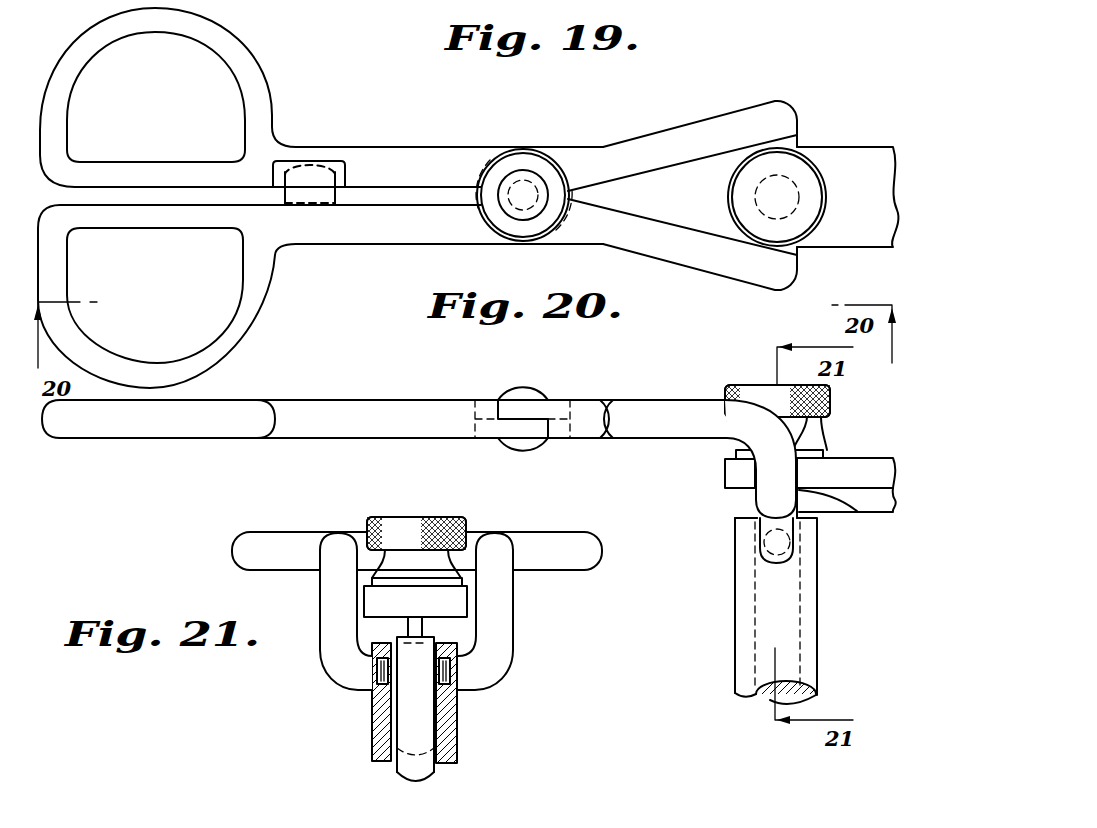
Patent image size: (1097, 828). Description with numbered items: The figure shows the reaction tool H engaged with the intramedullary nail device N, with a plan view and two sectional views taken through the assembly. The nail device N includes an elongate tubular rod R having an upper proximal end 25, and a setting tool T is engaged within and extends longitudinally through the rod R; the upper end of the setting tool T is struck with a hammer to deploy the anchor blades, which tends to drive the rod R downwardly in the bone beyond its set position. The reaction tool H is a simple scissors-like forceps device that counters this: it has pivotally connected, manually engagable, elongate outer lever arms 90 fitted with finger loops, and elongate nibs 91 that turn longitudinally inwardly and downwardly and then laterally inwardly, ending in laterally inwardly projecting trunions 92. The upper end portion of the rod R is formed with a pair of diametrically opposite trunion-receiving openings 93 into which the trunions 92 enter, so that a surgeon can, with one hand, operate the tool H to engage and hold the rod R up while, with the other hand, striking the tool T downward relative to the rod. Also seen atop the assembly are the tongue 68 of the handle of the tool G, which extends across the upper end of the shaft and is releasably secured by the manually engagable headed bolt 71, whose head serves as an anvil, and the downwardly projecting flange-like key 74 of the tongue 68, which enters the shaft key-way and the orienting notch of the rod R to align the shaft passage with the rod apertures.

In FIG. 19, the reaction tool H is at (320, 198).
In FIG. 20, the reaction tool H is at (384, 402).
In FIG. 21, the reaction tool H is at (371, 532).
In FIG. 19, the tool G is at (859, 146).
In FIG. 20, the tool G is at (895, 432).
In FIG. 21, the tool G is at (470, 598).
In FIG. 20, the rod R is at (803, 606).
In FIG. 21, the rod R is at (370, 741).
In FIG. 20, the intramedullary nail device N is at (821, 648).
In FIG. 20, the setting tool T is at (760, 702).
In FIG. 21, the setting tool T is at (440, 728).
In FIG. 20, the upper proximal end 25 is at (753, 517).
In FIG. 20, the tongue 68 is at (729, 470).
In FIG. 19, the headed bolt 71 is at (732, 197).
In FIG. 20, the headed bolt 71 is at (834, 400).
In FIG. 21, the headed bolt 71 is at (420, 516).
In FIG. 20, the key 74 is at (836, 506).
In FIG. 19, the outer lever arms 90 is at (440, 149).
In FIG. 20, the outer lever arms 90 is at (432, 380).
In FIG. 21, the outer lever arms 90 is at (282, 533).
In FIG. 19, the nibs 91 is at (678, 132).
In FIG. 20, the nibs 91 is at (646, 400).
In FIG. 21, the nibs 91 is at (328, 583).
In FIG. 20, the trunions 92 is at (762, 542).
In FIG. 21, the trunions 92 is at (375, 681).
In FIG. 21, the trunion-receiving openings 93 is at (375, 664).